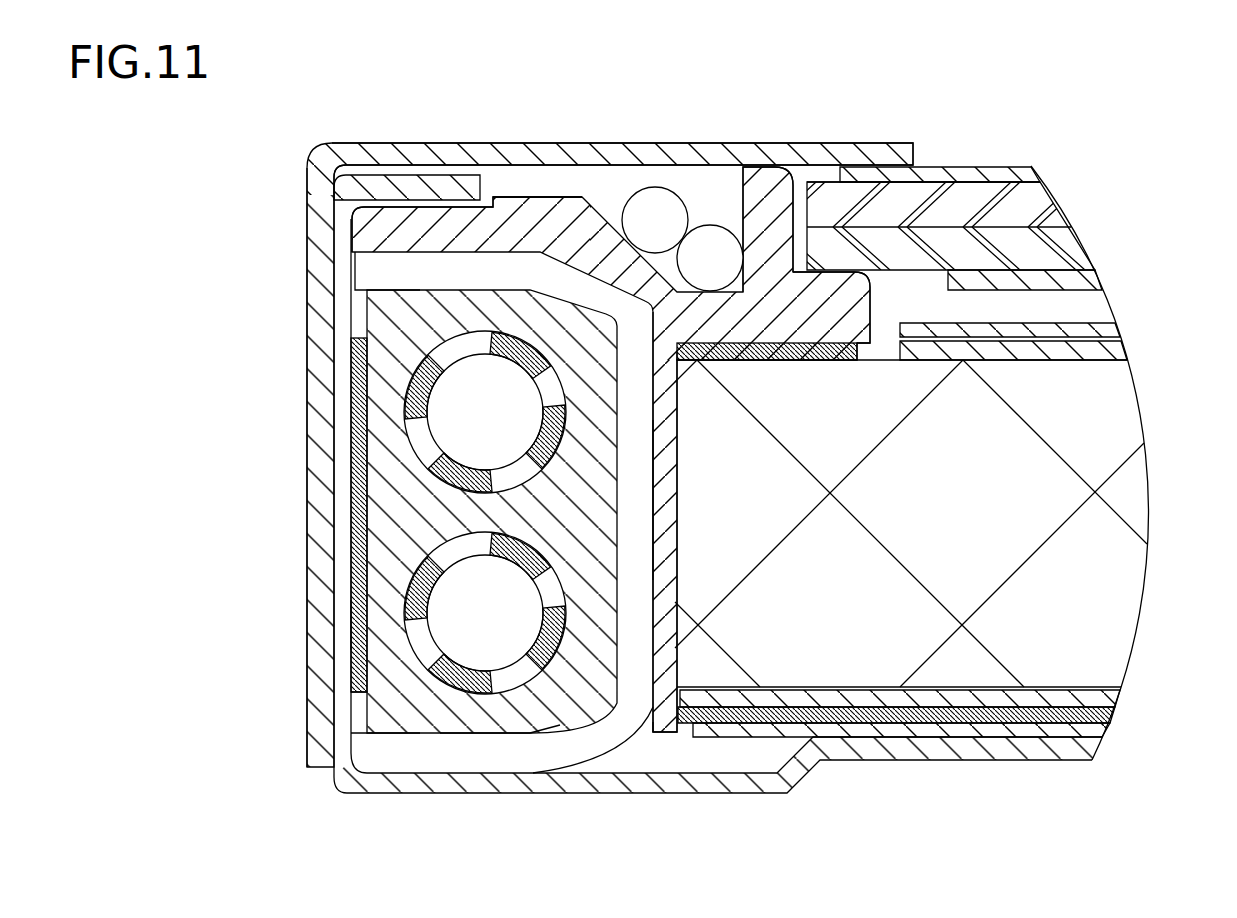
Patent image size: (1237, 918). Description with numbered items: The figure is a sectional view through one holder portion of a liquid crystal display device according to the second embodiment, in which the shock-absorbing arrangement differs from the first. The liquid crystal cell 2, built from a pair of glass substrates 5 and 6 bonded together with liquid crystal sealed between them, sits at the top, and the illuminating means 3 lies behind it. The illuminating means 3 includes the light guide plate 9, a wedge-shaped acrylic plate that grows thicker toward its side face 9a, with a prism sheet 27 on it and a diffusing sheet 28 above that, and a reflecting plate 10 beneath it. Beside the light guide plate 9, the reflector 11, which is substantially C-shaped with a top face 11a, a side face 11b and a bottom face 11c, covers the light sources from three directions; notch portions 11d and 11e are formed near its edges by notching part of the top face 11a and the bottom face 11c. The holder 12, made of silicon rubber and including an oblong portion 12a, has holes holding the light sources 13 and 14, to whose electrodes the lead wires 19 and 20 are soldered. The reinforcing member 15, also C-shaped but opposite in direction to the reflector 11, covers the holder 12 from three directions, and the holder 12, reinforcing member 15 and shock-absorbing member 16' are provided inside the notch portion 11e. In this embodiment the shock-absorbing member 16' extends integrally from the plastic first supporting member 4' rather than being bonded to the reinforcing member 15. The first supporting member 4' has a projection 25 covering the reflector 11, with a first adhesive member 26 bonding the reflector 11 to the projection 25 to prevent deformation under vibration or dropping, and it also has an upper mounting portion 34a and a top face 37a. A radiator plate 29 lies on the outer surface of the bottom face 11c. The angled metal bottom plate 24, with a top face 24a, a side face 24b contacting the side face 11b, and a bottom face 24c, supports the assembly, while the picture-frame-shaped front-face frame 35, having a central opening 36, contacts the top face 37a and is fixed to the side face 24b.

The liquid crystal cell 2 is at (1018, 168).
The illuminating means 3 is at (348, 706).
The first supporting member 4' is at (537, 139).
The glass substrate 5 is at (1037, 196).
The glass substrate 6 is at (1062, 240).
The light guide plate 9 is at (1125, 588).
The side face 9a is at (677, 448).
The reflecting plate 10 is at (1107, 688).
The reflector 11 is at (350, 628).
The top face 11a is at (787, 350).
The side face 11b is at (350, 538).
The bottom face 11c is at (815, 705).
The notch portion 11d is at (677, 352).
The notch portion 11e is at (390, 312).
The holder 12 is at (385, 552).
The oblong portion 12a is at (453, 712).
The light source 13 is at (408, 395).
The light source 14 is at (406, 656).
The reinforcing member 15 is at (642, 528).
The shock-absorbing member 16' is at (702, 500).
The lead wire 19 is at (710, 240).
The lead wire 20 is at (650, 205).
The bottom plate 24 is at (700, 797).
The top face 24a is at (408, 186).
The side face 24b is at (338, 459).
The bottom face 24c is at (540, 786).
The projection 25 is at (510, 208).
The first adhesive member 26 is at (395, 262).
The prism sheet 27 is at (1100, 358).
The diffusing sheet 28 is at (1100, 328).
The radiator plate 29 is at (757, 729).
The upper mounting portion 34a is at (833, 276).
The front-face frame 35 is at (447, 150).
The opening 36 is at (943, 166).
The top face 37a is at (758, 172).